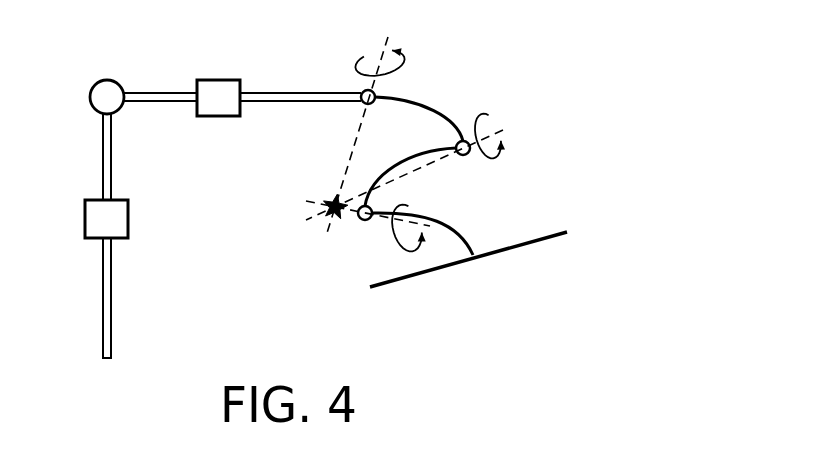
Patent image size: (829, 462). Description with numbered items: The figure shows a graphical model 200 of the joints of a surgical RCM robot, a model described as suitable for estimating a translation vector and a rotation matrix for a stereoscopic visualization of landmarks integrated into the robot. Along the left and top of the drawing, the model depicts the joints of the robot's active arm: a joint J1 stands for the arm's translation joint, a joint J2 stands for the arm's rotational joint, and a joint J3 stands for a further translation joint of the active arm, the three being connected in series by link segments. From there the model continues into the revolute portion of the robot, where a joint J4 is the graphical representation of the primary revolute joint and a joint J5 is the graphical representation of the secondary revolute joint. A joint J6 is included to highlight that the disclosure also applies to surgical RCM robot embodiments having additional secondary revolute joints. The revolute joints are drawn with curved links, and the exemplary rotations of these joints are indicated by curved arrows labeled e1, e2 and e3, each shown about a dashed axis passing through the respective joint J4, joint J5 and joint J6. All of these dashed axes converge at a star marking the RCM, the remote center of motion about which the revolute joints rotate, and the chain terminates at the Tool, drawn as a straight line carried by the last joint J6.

The graphical model 200 is at (526, 70).
The joint J1 is at (89, 236).
The joint J2 is at (143, 81).
The joint J3 is at (279, 82).
The joint J4 is at (412, 115).
The joint J5 is at (419, 173).
The joint J6 is at (411, 230).
The rotation axis of joint J4 e1 is at (381, 135).
The rotation axis of joint J5 e2 is at (423, 167).
The rotation axis of joint J6 e3 is at (377, 232).
The remote center of motion RCM is at (302, 213).
The surgical tool Tool is at (468, 264).